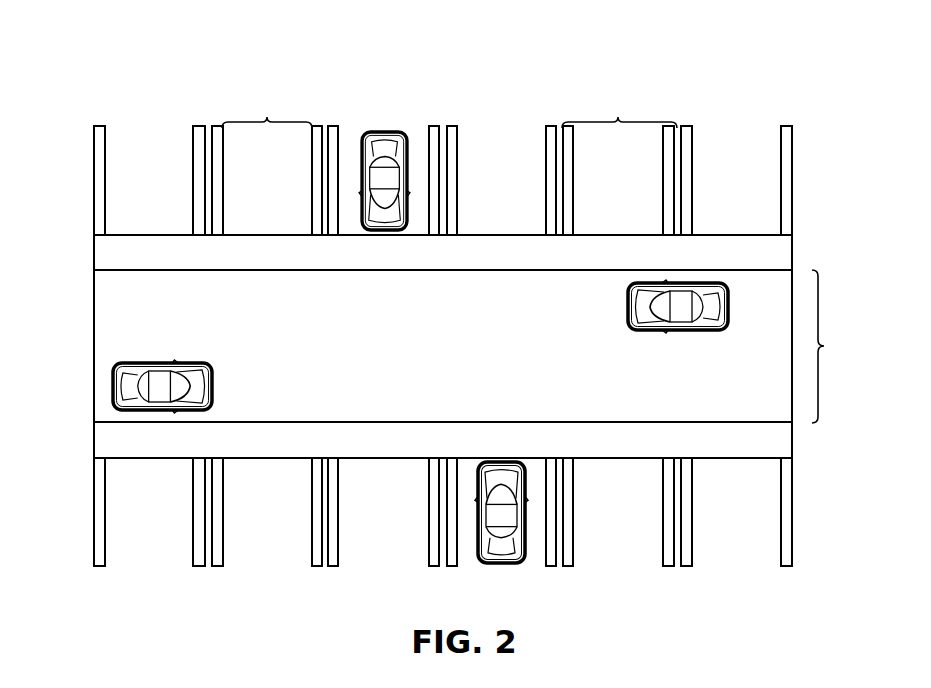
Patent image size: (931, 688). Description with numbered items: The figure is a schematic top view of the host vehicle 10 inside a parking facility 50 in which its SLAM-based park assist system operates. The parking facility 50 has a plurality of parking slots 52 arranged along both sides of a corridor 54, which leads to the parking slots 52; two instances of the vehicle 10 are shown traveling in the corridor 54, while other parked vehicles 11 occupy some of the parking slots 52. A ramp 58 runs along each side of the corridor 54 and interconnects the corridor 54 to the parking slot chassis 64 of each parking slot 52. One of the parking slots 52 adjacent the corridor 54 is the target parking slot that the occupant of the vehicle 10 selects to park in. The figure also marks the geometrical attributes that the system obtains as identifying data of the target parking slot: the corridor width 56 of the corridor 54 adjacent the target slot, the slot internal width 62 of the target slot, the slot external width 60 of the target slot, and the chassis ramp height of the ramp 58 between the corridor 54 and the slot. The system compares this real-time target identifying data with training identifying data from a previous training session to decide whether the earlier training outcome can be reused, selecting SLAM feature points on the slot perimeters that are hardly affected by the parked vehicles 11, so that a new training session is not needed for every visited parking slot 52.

The parking facility 50 is at (810, 48).
The parking slot 52 is at (745, 147).
The corridor 54 is at (93, 347).
The corridor width 56 is at (839, 346).
The ramp 58 is at (93, 253).
The slot external width 60 is at (619, 158).
The slot internal width 62 is at (267, 159).
The parking slot chassis 64 is at (265, 548).
The vehicle 10 is at (213, 387).
The parked vehicle 11 is at (385, 131).